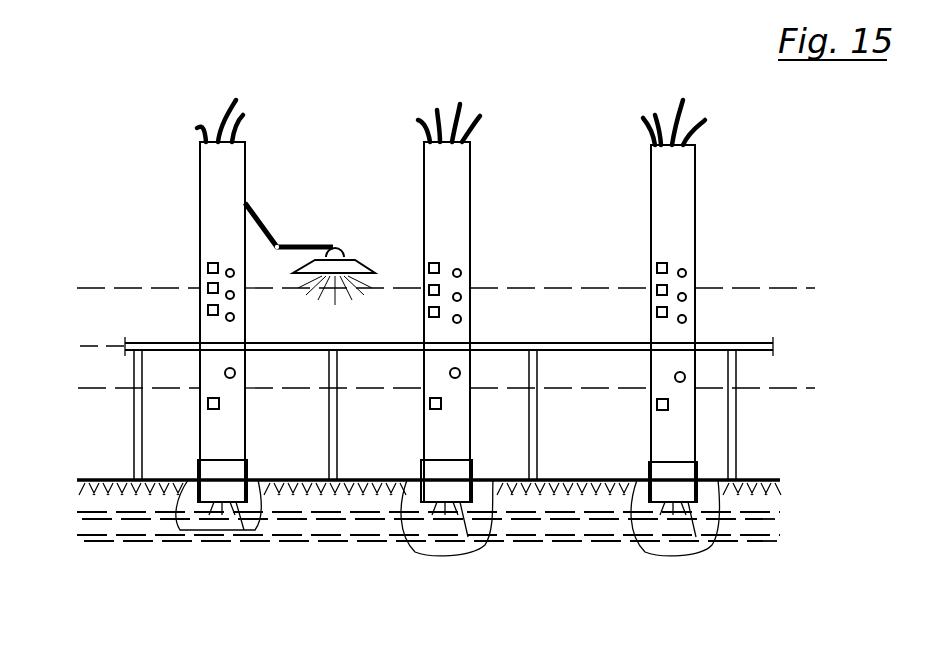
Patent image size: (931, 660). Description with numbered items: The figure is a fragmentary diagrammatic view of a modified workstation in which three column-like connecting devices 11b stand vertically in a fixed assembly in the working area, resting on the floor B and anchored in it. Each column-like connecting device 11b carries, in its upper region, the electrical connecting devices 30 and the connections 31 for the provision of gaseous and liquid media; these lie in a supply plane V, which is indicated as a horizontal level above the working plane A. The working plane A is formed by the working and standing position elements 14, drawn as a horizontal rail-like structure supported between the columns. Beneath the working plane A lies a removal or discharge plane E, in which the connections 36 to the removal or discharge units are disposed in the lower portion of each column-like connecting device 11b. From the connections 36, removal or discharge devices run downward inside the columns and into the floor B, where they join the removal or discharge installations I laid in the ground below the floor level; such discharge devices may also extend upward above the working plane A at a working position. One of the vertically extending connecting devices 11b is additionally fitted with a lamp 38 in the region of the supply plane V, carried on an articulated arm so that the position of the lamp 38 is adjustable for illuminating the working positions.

The column-like connecting device 11b is at (208, 165).
The working and standing position element 14 is at (765, 352).
The electrical connecting device 30 is at (429, 312).
The connection for gaseous and liquid media 31 is at (461, 295).
The connection to removal or discharge unit 36 is at (219, 403).
The lamp 38 is at (333, 245).
The removal or discharge installation I is at (230, 518).
The supply plane V is at (92, 287).
The working plane A is at (83, 345).
The removal or discharge plane E is at (88, 390).
The floor B is at (90, 478).